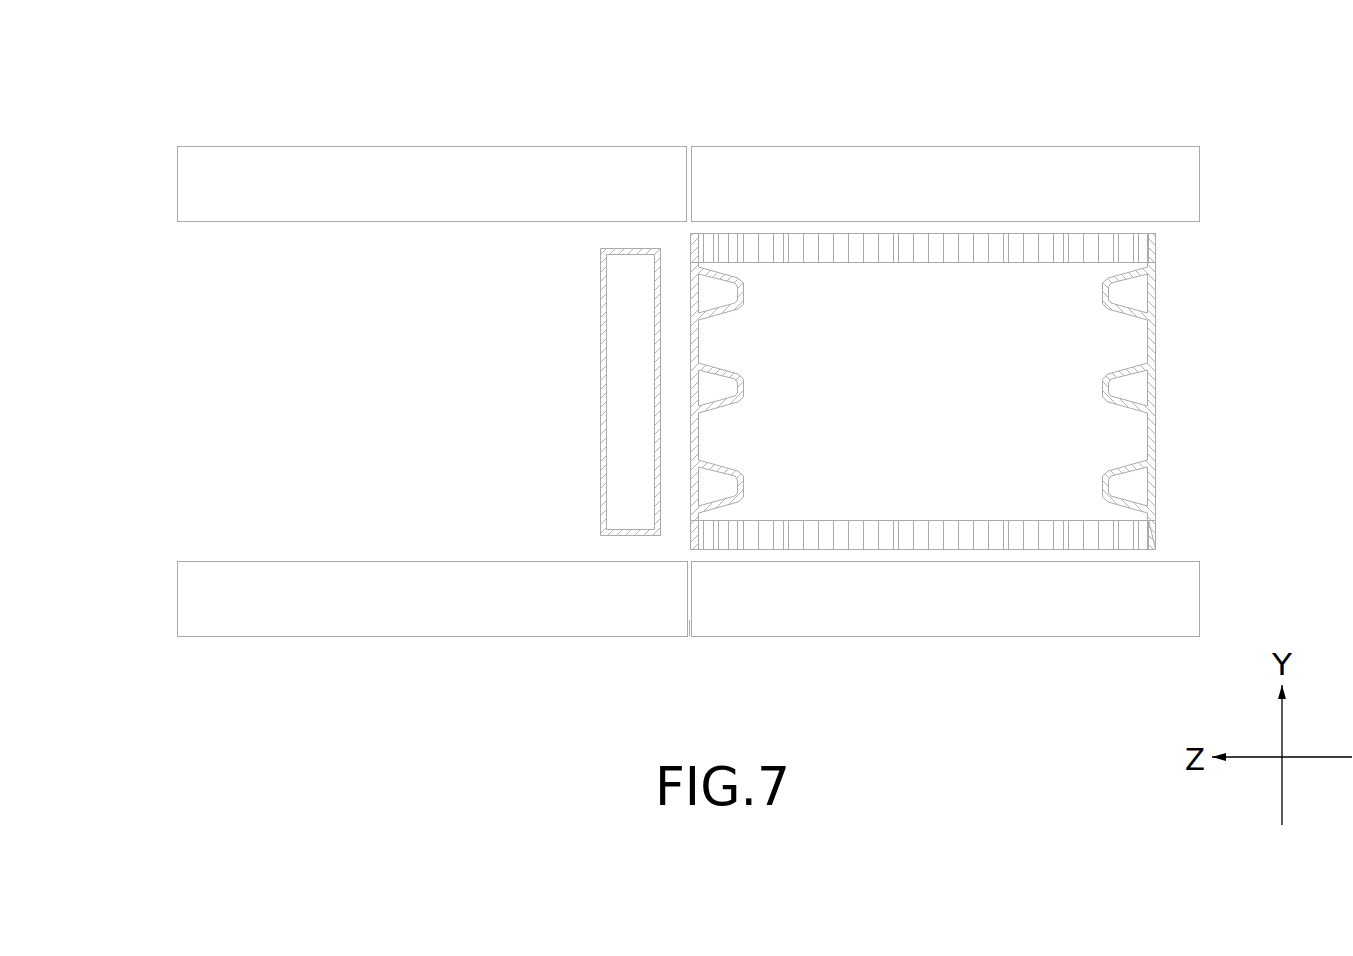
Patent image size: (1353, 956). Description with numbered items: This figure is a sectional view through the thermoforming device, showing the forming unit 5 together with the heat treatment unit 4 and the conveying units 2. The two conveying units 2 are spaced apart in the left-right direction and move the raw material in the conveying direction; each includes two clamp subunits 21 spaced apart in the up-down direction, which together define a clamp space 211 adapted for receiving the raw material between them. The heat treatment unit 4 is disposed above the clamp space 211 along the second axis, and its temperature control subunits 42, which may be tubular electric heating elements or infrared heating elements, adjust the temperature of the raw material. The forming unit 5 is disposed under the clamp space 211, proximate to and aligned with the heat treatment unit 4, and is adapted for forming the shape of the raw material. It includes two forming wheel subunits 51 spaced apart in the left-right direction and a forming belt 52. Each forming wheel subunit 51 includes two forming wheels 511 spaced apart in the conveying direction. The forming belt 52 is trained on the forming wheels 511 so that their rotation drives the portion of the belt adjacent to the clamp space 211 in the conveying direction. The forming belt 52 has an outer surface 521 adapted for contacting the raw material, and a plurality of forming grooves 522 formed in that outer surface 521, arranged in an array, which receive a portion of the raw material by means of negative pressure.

The conveying unit 2 is at (626, 393).
The clamp subunit 21 is at (343, 146).
The clamp space 211 is at (689, 625).
The heat treatment unit 4 is at (567, 392).
The temperature control subunit 42 is at (620, 308).
The forming unit 5 is at (889, 400).
The forming wheel subunit 51 is at (981, 400).
The forming wheel 511 is at (985, 242).
The forming belt 52 is at (889, 392).
The outer surface 521 is at (1156, 534).
The forming groove 522 is at (1125, 392).